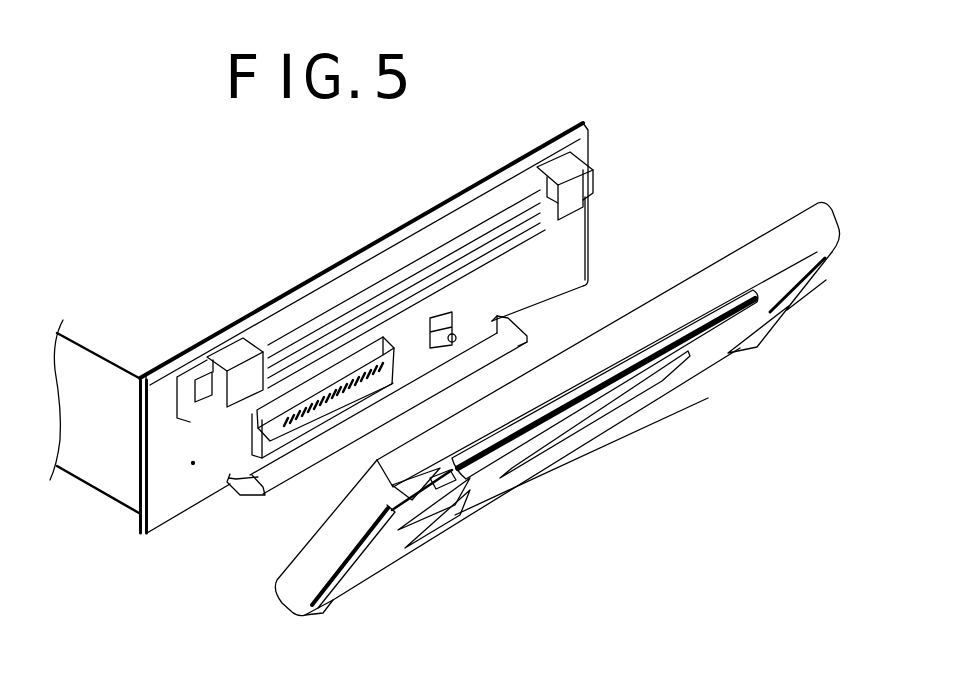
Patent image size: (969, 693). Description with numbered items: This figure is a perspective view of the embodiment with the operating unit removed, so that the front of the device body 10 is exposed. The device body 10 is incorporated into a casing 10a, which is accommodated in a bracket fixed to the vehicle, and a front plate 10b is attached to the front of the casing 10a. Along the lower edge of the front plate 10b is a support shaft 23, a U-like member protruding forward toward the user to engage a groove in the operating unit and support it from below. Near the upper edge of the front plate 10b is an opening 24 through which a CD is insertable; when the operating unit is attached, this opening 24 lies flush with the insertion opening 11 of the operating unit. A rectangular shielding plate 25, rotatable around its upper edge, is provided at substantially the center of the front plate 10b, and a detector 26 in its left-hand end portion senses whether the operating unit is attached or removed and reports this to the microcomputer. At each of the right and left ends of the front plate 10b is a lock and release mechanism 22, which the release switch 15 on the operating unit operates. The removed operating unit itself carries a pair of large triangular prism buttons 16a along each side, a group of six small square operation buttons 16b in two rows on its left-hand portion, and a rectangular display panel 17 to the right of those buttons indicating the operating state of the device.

The device body 10 is at (458, 88).
The casing 10a is at (92, 473).
The front plate 10b is at (573, 235).
The insertion opening 11 is at (781, 245).
The release switch 15 is at (450, 482).
The triangular prism buttons 16a is at (333, 598).
The operation buttons 16b is at (402, 543).
The display panel 17 is at (607, 413).
The lock and release mechanism 22 is at (203, 356).
The support shaft 23 is at (572, 318).
The opening 24 is at (417, 277).
The shielding plate 25 is at (317, 397).
The detector 26 is at (193, 463).